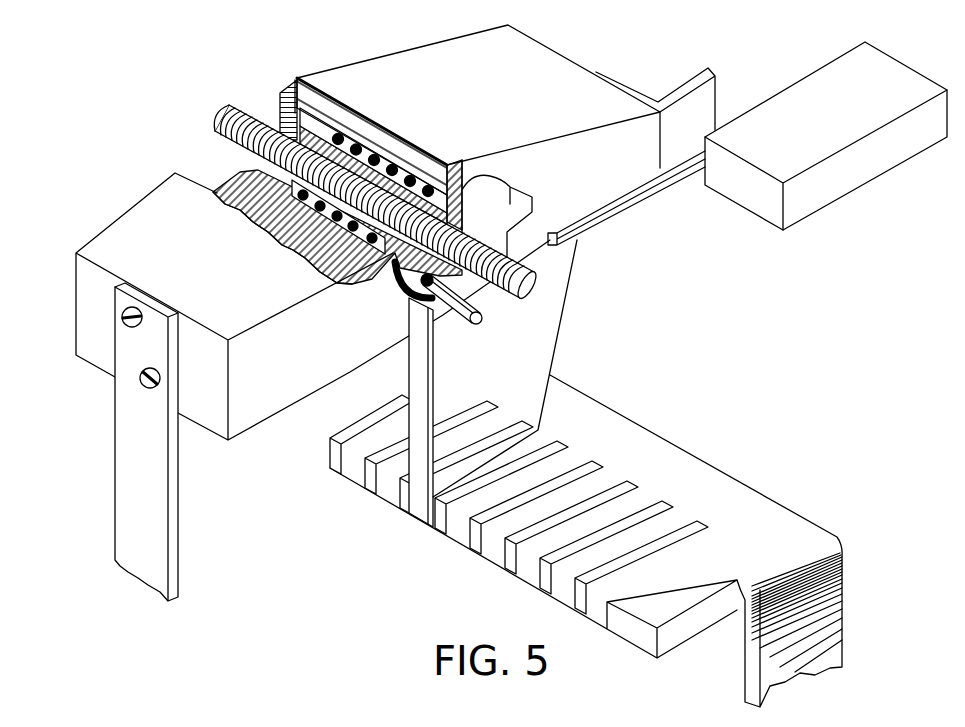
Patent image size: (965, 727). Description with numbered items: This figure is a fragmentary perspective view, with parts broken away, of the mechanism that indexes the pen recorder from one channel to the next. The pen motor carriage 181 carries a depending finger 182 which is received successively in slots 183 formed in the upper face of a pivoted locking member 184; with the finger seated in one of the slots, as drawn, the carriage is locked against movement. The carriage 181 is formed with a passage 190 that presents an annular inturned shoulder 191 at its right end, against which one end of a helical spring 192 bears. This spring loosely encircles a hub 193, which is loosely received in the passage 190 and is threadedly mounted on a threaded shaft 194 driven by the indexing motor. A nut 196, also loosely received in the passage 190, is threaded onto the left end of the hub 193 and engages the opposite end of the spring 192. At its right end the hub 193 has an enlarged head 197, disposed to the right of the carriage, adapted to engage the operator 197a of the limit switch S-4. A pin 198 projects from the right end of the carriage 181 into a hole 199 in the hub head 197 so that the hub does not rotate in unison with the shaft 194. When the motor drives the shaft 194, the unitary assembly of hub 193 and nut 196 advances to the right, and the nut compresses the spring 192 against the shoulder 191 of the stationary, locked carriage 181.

The carriage 181 is at (247, 418).
The depending finger 182 is at (550, 333).
The slots 183 is at (467, 480).
The pivoted locking member 184 is at (672, 454).
The passage 190 is at (356, 130).
The annular inturned shoulder 191 is at (453, 157).
The helical spring 192 is at (366, 138).
The hub 193 is at (402, 160).
The threaded shaft 194 is at (246, 114).
The nut 196 is at (281, 94).
The enlarged head 197 is at (490, 193).
The operator 197a is at (615, 205).
The pin 198 is at (462, 318).
The hole 199 is at (430, 300).
The limit switch S-4 is at (850, 178).